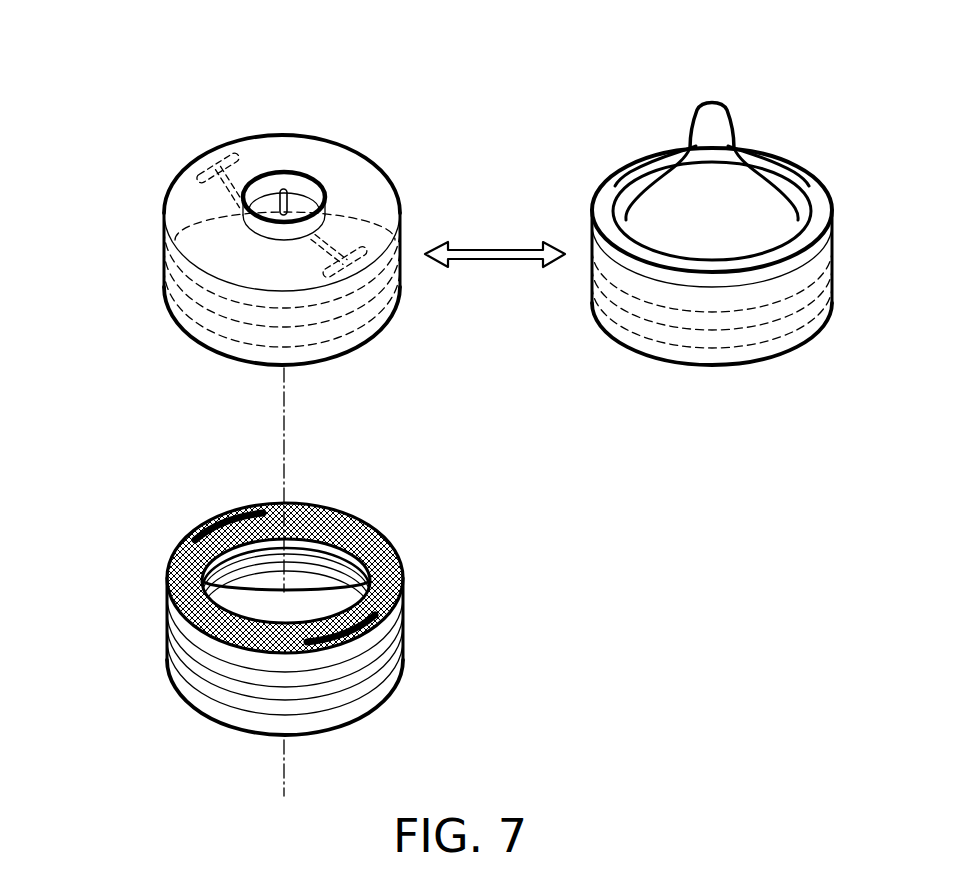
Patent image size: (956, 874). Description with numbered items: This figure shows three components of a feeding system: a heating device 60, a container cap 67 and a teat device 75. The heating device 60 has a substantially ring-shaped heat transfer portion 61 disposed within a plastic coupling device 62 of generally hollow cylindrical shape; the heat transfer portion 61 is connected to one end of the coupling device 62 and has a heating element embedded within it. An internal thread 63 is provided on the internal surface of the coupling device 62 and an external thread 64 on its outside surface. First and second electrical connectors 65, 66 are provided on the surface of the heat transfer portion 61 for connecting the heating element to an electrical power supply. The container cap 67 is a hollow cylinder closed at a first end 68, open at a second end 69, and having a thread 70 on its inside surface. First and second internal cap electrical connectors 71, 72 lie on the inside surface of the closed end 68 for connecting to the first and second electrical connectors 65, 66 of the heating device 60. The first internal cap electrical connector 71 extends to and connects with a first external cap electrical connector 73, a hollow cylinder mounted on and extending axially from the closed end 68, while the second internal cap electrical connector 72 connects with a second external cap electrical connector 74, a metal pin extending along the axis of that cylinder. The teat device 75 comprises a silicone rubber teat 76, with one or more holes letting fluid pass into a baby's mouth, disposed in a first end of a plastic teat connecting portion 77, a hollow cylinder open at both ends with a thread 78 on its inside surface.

The heating device 60 is at (277, 581).
The heat transfer portion 61 is at (350, 522).
The coupling device 62 is at (420, 620).
The internal thread 63 is at (222, 579).
The external thread 64 is at (225, 698).
The first electrical connector 65 is at (358, 637).
The second electrical connector 66 is at (230, 508).
The container cap 67 is at (248, 215).
The first end 68 is at (358, 188).
The second end 69 is at (358, 353).
The thread 70 is at (202, 305).
The first internal cap electrical connector 71 is at (353, 262).
The second internal cap electrical connector 72 is at (218, 163).
The first external cap electrical connector 73 is at (243, 222).
The second external cap electrical connector 74 is at (284, 192).
The teat device 75 is at (715, 214).
The teat 76 is at (714, 112).
The teat connecting portion 77 is at (633, 348).
The thread 78 is at (793, 327).